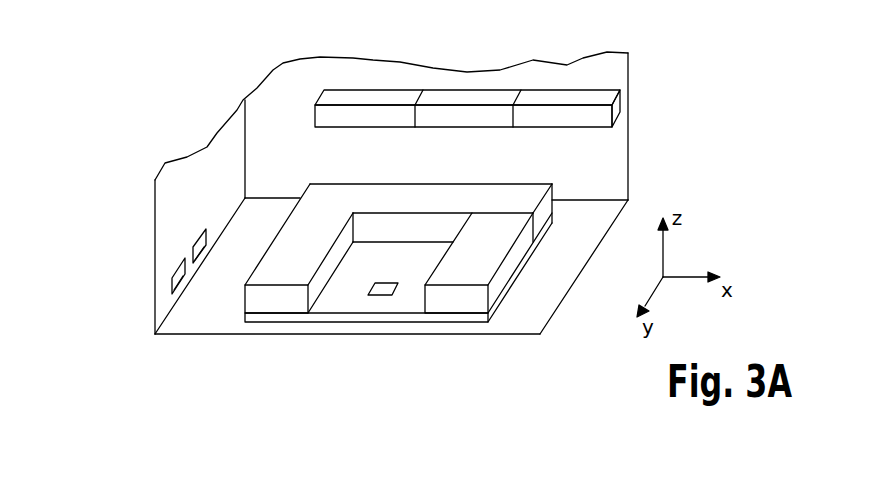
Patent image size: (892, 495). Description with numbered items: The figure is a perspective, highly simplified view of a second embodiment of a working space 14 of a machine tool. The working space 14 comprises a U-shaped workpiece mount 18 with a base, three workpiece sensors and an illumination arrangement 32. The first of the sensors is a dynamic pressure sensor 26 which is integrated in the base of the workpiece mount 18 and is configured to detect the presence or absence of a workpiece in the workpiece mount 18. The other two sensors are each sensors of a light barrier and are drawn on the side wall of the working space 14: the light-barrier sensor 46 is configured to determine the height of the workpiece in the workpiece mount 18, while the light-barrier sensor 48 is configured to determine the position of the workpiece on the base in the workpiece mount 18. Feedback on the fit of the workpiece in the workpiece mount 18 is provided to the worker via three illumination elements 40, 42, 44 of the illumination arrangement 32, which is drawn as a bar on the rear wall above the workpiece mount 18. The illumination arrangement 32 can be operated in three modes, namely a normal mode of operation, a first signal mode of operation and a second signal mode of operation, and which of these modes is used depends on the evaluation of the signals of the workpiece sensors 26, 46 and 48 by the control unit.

The working space 14 is at (163, 112).
The workpiece mount 18 is at (268, 297).
The dynamic pressure sensor 26 is at (377, 298).
The illumination arrangement 32 is at (404, 68).
The illumination element 40 is at (370, 98).
The illumination element 42 is at (473, 98).
The illumination element 44 is at (565, 98).
The light-barrier sensor 46 is at (192, 252).
The light-barrier sensor 48 is at (174, 287).